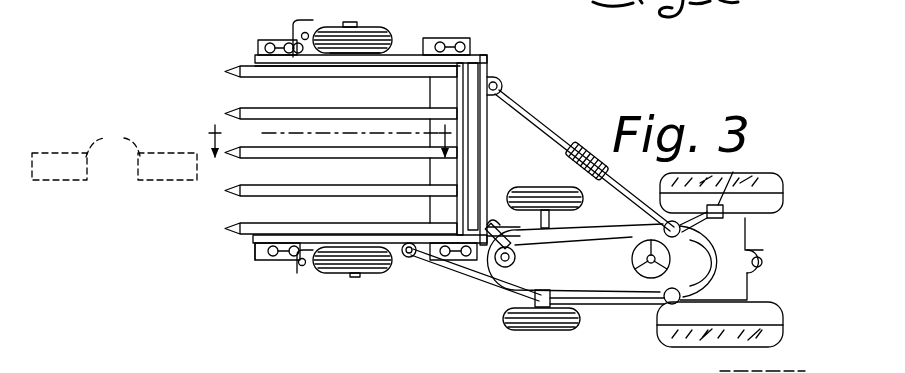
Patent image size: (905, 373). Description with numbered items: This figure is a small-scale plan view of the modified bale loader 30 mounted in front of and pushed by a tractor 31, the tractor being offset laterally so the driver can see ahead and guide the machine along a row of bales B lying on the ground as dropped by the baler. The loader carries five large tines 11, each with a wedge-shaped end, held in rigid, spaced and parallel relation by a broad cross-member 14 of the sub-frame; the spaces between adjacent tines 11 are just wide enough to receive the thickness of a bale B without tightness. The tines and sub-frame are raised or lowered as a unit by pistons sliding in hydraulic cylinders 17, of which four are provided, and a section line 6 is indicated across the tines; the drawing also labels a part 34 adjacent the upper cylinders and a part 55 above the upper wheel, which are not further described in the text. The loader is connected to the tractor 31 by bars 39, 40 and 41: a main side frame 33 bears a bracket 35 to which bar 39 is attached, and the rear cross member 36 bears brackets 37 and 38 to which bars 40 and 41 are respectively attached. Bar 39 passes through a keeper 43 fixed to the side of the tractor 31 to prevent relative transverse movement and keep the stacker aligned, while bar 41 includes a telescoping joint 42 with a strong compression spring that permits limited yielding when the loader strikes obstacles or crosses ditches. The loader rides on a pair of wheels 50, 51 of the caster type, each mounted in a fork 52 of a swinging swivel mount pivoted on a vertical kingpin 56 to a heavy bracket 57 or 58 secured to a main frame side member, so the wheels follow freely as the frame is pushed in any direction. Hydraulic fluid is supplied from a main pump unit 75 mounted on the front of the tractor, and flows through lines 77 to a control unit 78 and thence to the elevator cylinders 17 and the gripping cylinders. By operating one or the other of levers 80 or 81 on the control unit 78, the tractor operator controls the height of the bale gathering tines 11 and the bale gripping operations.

The bales B is at (114, 152).
The section line 6- 6 is at (325, 131).
The tines 11 is at (333, 222).
The cross-member 14 is at (437, 175).
The hydraulic cylinders 17 is at (270, 243).
The loader 30 is at (497, 52).
The tractor 31 is at (616, 220).
The main side frame 33 is at (383, 243).
The upper plate 34 is at (400, 55).
The bracket 35 is at (408, 257).
The rear cross member 36 is at (488, 137).
The bracket 37 is at (487, 222).
The bracket 38 is at (501, 82).
The bar 39 is at (508, 292).
The bar 40 is at (492, 238).
The bar 41 is at (543, 122).
The telescoping joint 42 is at (568, 162).
The keeper 43 is at (580, 308).
The wheel 50 is at (380, 273).
The wheel 51 is at (380, 30).
The fork 52 is at (313, 274).
The upper motor 55 is at (322, 26).
The kingpin 56 is at (300, 268).
The bracket 57 is at (258, 258).
The bracket 58 is at (297, 34).
The main pump unit 75 is at (517, 258).
The lines 77 is at (590, 238).
The control unit 78 is at (707, 208).
The lever 80 is at (733, 181).
The lever 81 is at (728, 219).